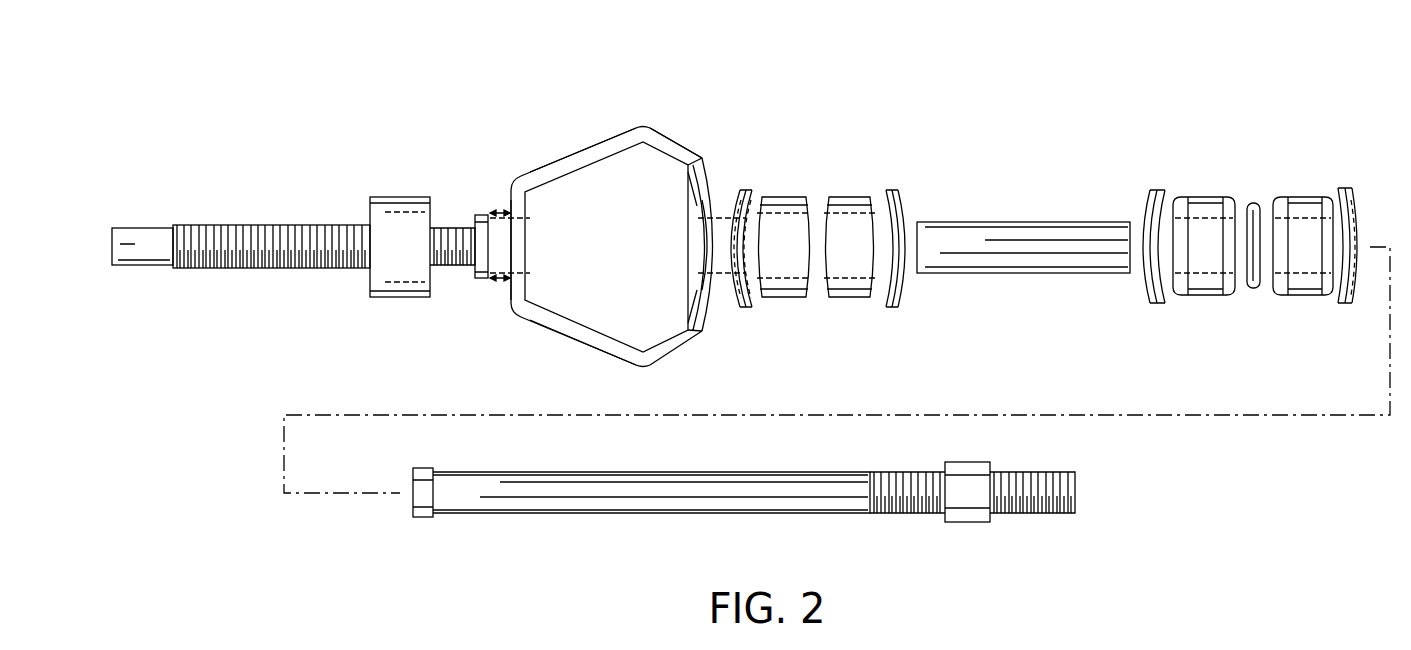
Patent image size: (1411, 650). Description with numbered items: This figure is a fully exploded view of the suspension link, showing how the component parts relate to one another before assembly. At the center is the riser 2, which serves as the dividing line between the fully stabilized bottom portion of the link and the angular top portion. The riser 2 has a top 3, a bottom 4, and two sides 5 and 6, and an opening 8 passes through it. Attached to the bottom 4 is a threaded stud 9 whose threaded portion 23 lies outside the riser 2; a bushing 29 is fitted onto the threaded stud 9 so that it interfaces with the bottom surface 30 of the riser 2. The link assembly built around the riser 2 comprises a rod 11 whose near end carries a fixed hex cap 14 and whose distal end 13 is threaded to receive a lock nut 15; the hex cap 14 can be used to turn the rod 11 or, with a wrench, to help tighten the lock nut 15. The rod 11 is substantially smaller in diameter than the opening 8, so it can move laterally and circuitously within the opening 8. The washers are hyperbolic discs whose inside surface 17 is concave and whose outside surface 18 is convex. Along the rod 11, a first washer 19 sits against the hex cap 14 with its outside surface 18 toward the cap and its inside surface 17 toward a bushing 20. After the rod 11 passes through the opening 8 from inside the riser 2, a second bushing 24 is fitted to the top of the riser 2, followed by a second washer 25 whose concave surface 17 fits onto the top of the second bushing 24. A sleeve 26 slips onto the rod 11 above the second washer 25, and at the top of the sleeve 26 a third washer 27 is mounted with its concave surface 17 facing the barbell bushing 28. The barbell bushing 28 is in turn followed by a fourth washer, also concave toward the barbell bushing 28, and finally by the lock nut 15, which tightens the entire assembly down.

The riser 2 is at (658, 98).
The top 3 is at (701, 155).
The bottom 4 is at (508, 198).
The side 5 is at (582, 145).
The side 6 is at (560, 338).
The opening 8 is at (706, 241).
The threaded stud 9 is at (240, 231).
The rod 11 is at (626, 498).
The distal end 13 is at (1076, 490).
The fixed hex cap 14 is at (421, 518).
The lock nut 15 is at (966, 513).
The inside surface 17 is at (746, 210).
The outside surface 18 is at (735, 206).
The first washer 19 is at (742, 192).
The bushing 20 is at (797, 260).
The threaded portion 23 is at (298, 190).
The second bushing 24 is at (864, 260).
The second washer 25 is at (889, 306).
The sleeve 26 is at (1036, 232).
The third washer 27 is at (1160, 190).
The barbell bushing 28 is at (1216, 197).
The bushing 29 is at (420, 245).
The bottom surface 30 is at (505, 291).